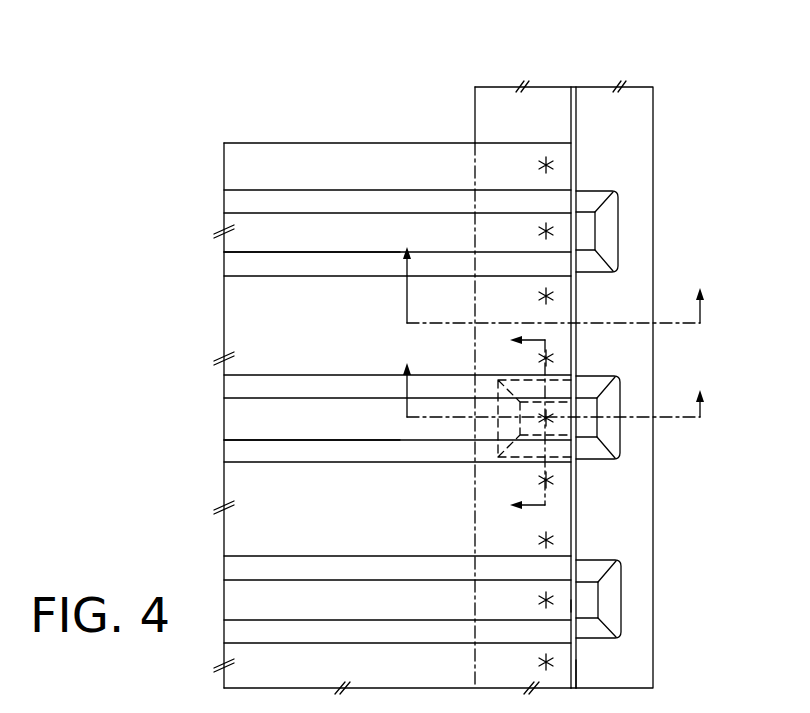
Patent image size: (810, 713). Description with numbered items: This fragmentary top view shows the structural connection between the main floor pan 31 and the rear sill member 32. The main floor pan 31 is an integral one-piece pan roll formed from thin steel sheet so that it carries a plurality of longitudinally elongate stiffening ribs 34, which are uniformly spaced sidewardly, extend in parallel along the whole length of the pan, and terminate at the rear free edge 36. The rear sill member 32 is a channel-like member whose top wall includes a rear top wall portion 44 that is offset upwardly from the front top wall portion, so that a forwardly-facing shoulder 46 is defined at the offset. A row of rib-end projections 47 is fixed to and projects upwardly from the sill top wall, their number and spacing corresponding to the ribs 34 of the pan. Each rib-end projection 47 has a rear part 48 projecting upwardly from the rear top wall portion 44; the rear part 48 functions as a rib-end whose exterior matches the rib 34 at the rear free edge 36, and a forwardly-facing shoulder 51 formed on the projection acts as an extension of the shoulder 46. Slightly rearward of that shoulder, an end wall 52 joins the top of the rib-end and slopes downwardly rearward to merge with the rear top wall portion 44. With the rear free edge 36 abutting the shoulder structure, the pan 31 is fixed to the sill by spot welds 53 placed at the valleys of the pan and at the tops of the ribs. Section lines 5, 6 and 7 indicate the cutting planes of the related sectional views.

The main floor pan 31 is at (318, 144).
The rear sill member 32 is at (654, 546).
The stiffening ribs 34 is at (248, 240).
The rear free edge 36 is at (578, 672).
The rear top wall portion 44 is at (633, 490).
The forwardly-facing shoulder 46 is at (570, 110).
The rib-end projections 47 is at (620, 235).
The rear part 48 is at (583, 243).
The forwardly-facing shoulder 51 is at (572, 605).
The end wall 52 is at (610, 212).
The spot welds 53 is at (551, 161).
The section line 5- 5 is at (554, 372).
The section line 6- 6 is at (554, 267).
The section line 7- 7 is at (517, 423).